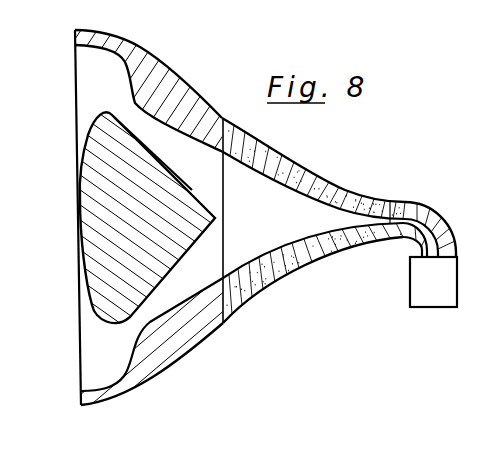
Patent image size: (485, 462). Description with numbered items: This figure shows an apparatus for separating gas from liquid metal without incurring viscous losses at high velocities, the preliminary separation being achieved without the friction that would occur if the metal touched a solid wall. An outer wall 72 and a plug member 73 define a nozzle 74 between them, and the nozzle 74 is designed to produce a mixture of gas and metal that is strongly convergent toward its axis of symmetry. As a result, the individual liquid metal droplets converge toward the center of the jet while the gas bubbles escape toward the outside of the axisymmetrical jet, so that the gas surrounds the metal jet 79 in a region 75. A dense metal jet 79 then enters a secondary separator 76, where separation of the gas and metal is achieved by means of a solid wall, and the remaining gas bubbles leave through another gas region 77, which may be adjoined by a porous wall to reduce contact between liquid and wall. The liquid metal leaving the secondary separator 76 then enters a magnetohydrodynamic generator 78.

The outer wall 72 is at (143, 60).
The plug member 73 is at (92, 213).
The nozzle 74 is at (165, 130).
The region 75 is at (270, 163).
The secondary separator 76 is at (422, 204).
The gas region 77 is at (407, 230).
The magnetohydrodynamic generator 78 is at (427, 287).
The metal jet 79 is at (325, 226).